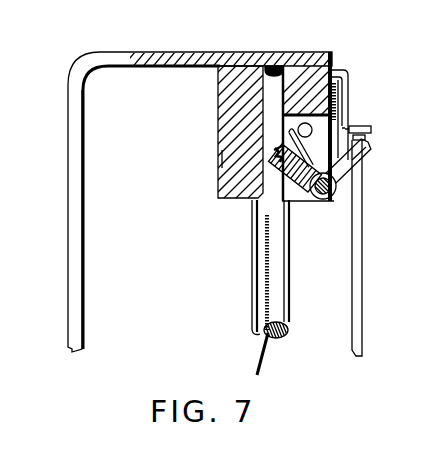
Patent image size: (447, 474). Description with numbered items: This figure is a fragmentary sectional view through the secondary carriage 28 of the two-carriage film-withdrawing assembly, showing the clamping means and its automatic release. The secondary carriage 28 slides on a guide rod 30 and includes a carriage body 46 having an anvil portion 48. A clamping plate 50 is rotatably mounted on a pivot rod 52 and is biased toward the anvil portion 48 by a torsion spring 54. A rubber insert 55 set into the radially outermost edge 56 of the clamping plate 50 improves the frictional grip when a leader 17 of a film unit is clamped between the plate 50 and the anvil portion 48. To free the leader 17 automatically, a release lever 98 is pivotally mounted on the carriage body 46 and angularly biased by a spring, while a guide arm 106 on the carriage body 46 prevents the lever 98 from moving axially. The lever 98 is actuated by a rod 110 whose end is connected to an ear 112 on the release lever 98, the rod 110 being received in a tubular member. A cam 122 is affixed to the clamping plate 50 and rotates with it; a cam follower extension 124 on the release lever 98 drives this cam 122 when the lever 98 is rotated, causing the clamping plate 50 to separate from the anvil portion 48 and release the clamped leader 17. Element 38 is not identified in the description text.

The secondary carriage 28 is at (208, 48).
The carriage body 46 is at (300, 78).
The torsion spring 54 is at (278, 150).
The radially outermost edge 56 is at (290, 137).
The rubber insert 55 is at (224, 158).
The anvil portion 48 is at (260, 172).
The release lever 98 is at (338, 93).
The guide arm 106 is at (347, 110).
The cam follower extension 124 is at (370, 130).
The ear 112 is at (368, 141).
The cam 122 is at (362, 152).
The pivot rod 52 is at (335, 197).
The clamping plate 50 is at (292, 184).
The leader 17 is at (268, 257).
The guide rod 30 is at (276, 292).
The rod 110 is at (355, 270).
The frame tube 38 is at (72, 258).